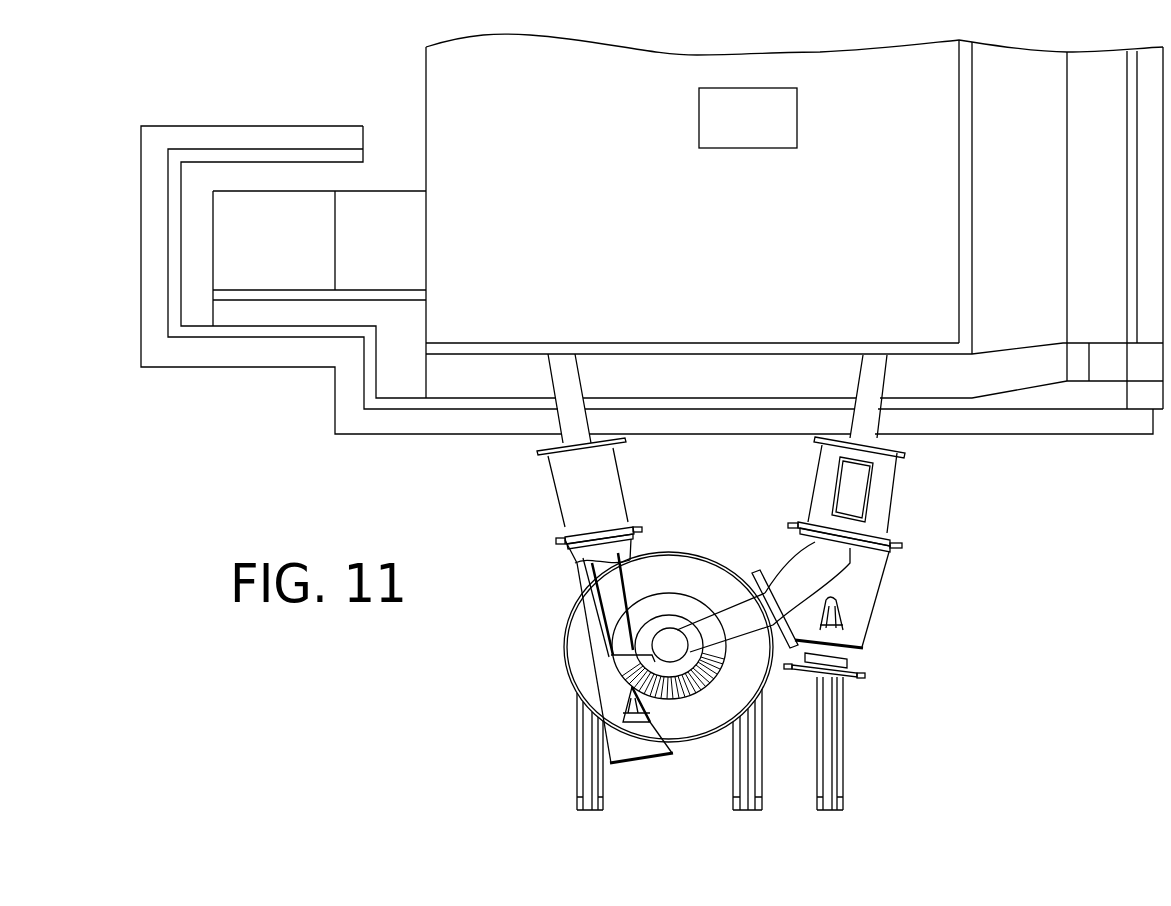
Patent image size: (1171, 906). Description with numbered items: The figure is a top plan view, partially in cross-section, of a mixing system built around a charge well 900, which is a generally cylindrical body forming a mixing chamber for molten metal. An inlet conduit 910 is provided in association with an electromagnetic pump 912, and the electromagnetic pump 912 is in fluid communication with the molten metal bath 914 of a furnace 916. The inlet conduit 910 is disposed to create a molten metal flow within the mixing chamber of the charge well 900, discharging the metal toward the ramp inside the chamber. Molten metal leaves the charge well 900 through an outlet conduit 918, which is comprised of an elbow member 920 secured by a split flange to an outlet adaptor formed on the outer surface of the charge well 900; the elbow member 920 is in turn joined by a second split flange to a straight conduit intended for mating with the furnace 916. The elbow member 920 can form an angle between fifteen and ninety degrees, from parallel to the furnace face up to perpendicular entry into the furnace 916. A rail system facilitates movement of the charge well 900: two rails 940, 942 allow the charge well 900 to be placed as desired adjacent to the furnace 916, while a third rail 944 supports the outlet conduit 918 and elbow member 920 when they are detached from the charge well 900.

The charge well 900 is at (528, 647).
The inlet conduit 910 is at (610, 595).
The electromagnetic pump 912 is at (572, 512).
The molten metal bath 914 is at (770, 243).
The furnace 916 is at (1090, 452).
The outlet conduit 918 is at (892, 502).
The elbow member 920 is at (845, 597).
The rail 940 is at (577, 779).
The rail 942 is at (733, 783).
The third rail 944 is at (843, 773).